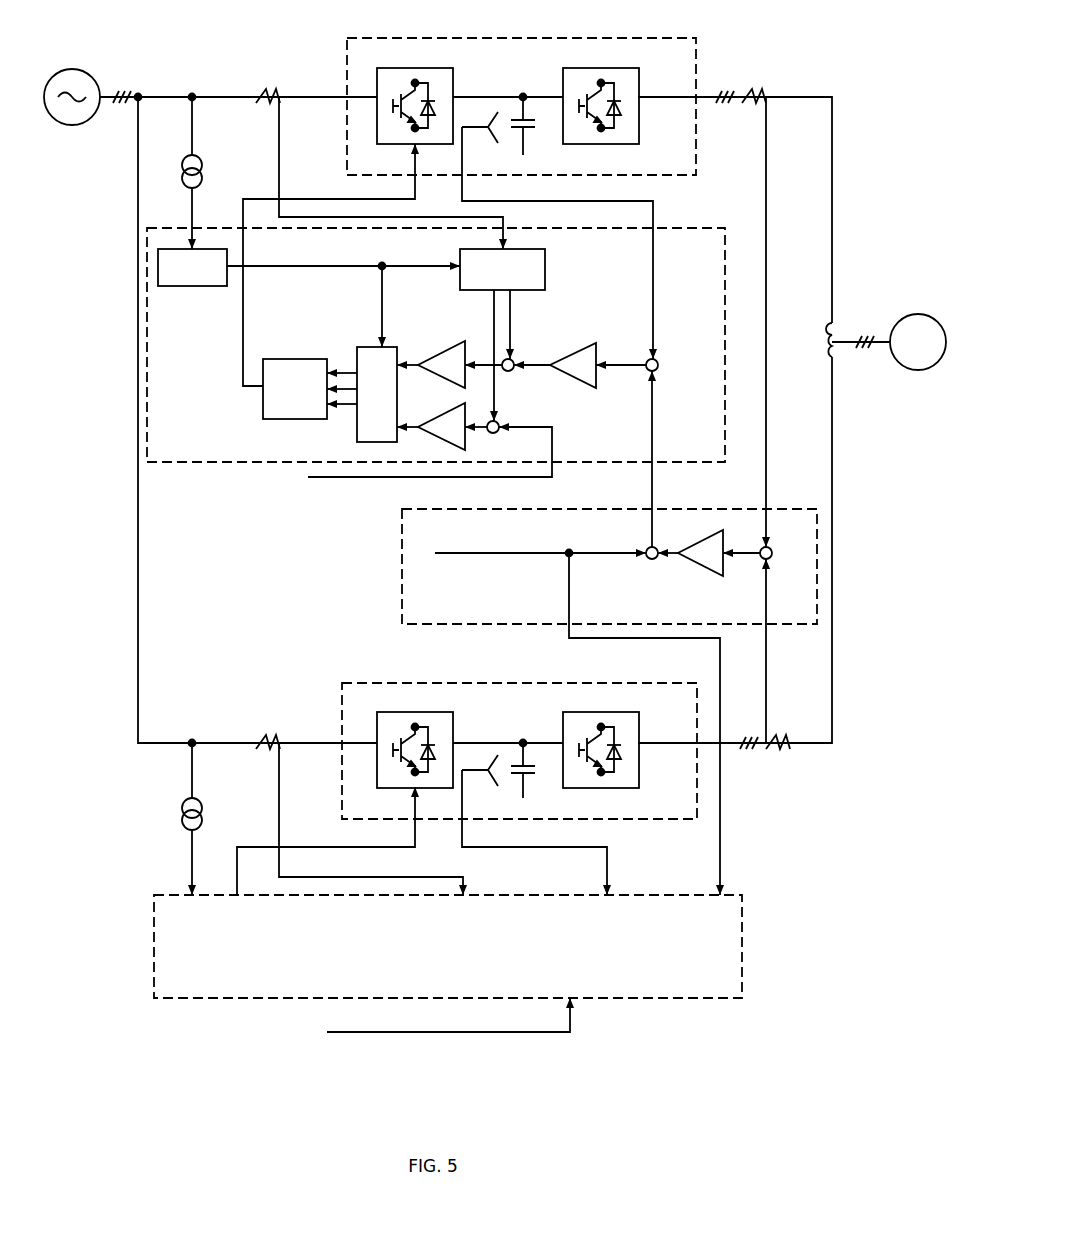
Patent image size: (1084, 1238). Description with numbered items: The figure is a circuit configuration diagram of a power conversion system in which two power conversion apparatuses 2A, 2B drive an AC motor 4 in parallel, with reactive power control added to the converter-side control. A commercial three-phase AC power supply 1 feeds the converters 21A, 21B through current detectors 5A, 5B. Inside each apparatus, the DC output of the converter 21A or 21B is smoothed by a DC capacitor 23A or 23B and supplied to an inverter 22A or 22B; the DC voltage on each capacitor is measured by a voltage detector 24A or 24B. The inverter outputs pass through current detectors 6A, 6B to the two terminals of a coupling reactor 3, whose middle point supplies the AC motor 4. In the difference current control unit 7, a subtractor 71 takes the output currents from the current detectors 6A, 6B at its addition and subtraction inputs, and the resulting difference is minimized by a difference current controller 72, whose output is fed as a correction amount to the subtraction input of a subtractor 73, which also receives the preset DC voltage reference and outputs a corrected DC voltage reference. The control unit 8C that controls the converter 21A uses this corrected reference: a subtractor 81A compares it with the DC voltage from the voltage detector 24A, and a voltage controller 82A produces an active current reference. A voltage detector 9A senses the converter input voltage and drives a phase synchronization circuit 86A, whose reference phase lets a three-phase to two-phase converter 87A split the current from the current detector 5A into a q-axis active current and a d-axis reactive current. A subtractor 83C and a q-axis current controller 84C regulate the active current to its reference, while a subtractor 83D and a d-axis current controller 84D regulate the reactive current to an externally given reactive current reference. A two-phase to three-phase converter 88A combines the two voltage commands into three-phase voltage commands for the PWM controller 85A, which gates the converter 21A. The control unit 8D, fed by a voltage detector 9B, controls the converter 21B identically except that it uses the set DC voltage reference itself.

The commercial three-phase AC power supply 1 is at (86, 71).
The power conversion apparatus 2A is at (529, 40).
The power conversion apparatus 2B is at (512, 684).
The coupling reactor 3 is at (843, 330).
The AC motor 4 is at (937, 316).
The current detector 5A is at (271, 99).
The current detector 5B is at (271, 744).
The current detector 6A is at (764, 99).
The current detector 6B is at (782, 744).
The difference current control unit 7 is at (729, 509).
The control unit 8C is at (694, 229).
The control unit 8D is at (657, 895).
The voltage detector 9A is at (203, 167).
The voltage detector 9B is at (203, 810).
The converter 21A is at (466, 97).
The converter 21B is at (466, 742).
The inverter 22A is at (642, 95).
The inverter 22B is at (642, 740).
The DC capacitor 23A is at (535, 135).
The DC capacitor 23B is at (535, 779).
The voltage detector 24A is at (488, 127).
The voltage detector 24B is at (499, 759).
The subtractor 71 is at (773, 551).
The difference current controller 72 is at (688, 562).
The subtractor 73 is at (657, 549).
The subtractor 81A is at (659, 364).
The voltage controller 82A is at (600, 349).
The subtractor 83C is at (513, 361).
The subtractor 83D is at (499, 422).
The q-axis current controller 84C is at (438, 351).
The d-axis current controller 84D is at (439, 420).
The PWM controller 85A is at (286, 359).
The phase synchronization circuit 86A is at (208, 287).
The 3-phase to 2-phase converter 87A is at (548, 267).
The 2-phase to 3-phase converter 88A is at (358, 348).